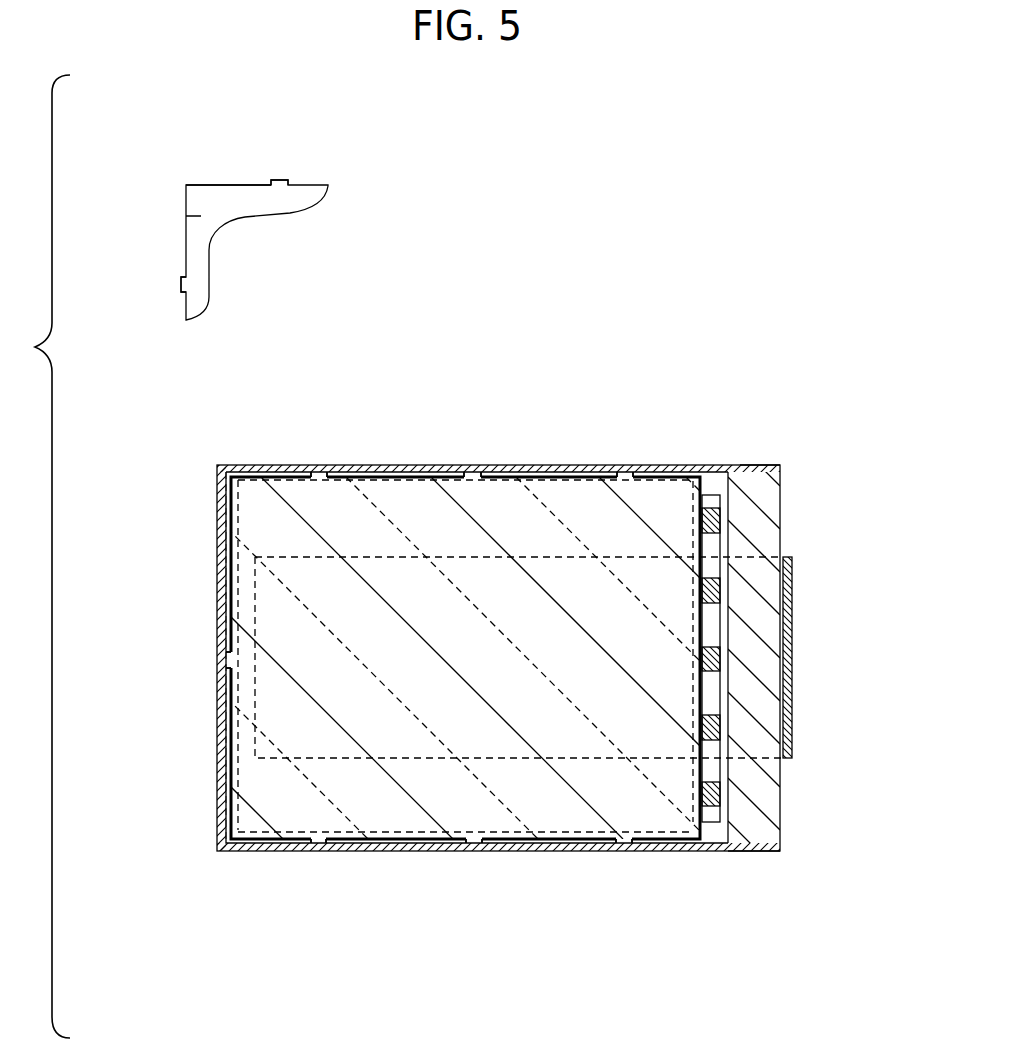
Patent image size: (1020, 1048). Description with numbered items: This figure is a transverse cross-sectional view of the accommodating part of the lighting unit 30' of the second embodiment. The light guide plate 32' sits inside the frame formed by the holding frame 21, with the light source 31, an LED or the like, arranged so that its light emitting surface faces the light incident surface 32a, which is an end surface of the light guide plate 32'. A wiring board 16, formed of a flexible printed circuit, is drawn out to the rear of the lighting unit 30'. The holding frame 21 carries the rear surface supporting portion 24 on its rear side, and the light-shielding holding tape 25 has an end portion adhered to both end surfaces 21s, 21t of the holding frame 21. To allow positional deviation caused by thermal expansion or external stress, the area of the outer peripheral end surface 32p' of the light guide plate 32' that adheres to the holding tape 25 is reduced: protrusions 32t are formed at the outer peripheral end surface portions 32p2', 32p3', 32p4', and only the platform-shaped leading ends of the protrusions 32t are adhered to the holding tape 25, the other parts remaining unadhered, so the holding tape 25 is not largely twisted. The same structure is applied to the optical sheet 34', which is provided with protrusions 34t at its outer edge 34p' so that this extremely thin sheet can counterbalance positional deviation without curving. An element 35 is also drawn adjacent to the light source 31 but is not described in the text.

The wiring board 16 is at (788, 698).
The holding frame 21 is at (770, 512).
The end surface of holding frame 21s is at (757, 467).
The end surface of holding frame 21t is at (752, 852).
The rear surface supporting portion 24 is at (222, 778).
The light-shielding holding tape 25 is at (223, 620).
The lighting unit 30' is at (498, 620).
The light source 31 is at (708, 645).
The light guide plate 32' is at (510, 618).
The light incident surface 32a is at (697, 572).
The outer peripheral end surface 32p' is at (549, 435).
The outer peripheral end surface portion 32p2' is at (271, 426).
The outer peripheral end surface portion 32p3' is at (150, 564).
The outer peripheral end surface portion 32p4' is at (396, 900).
The protrusion 32t is at (320, 475).
The optical sheet 34' is at (230, 234).
The outer edge 34p' is at (239, 146).
The protrusion 34t is at (281, 180).
The holder 35 is at (710, 495).